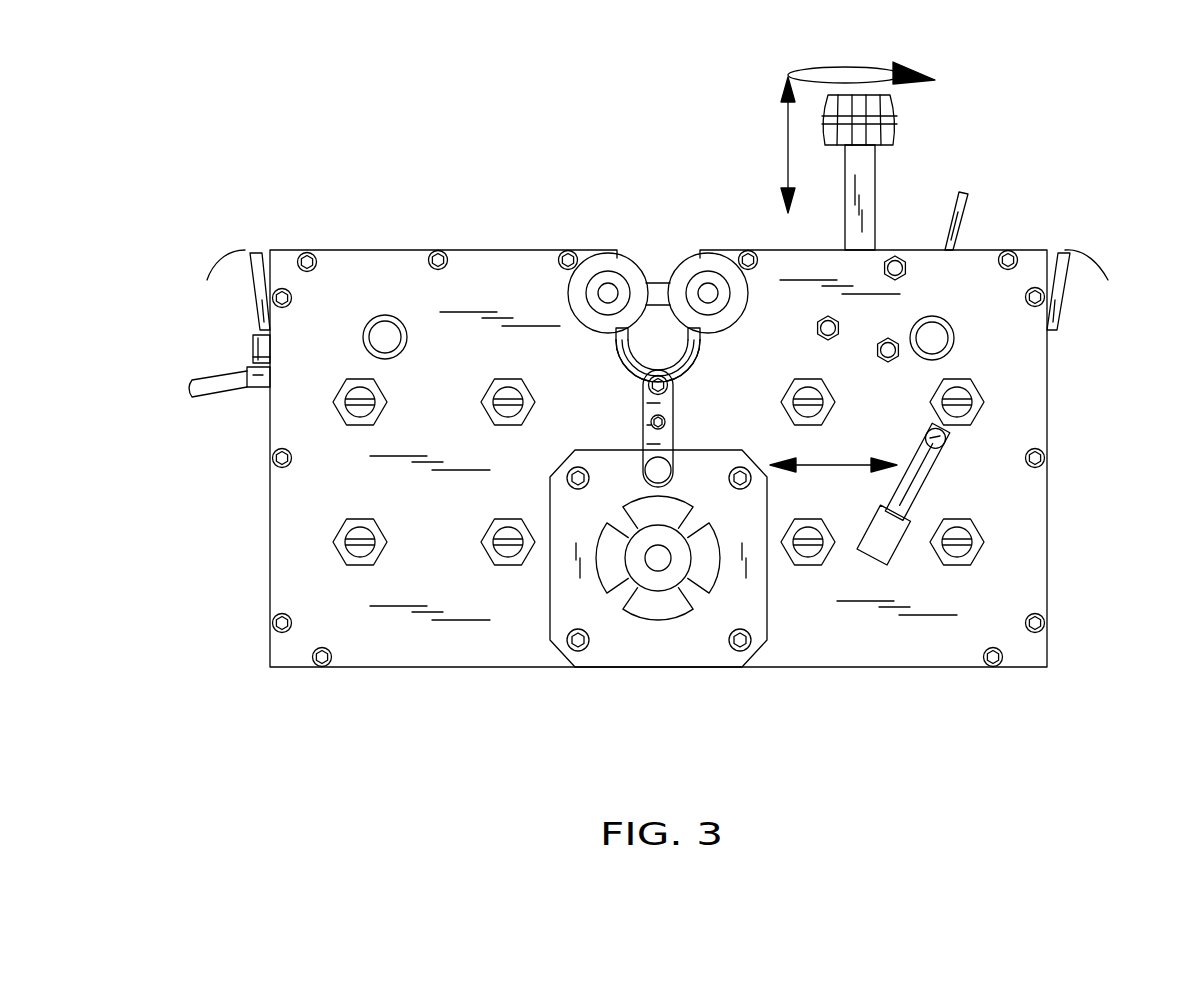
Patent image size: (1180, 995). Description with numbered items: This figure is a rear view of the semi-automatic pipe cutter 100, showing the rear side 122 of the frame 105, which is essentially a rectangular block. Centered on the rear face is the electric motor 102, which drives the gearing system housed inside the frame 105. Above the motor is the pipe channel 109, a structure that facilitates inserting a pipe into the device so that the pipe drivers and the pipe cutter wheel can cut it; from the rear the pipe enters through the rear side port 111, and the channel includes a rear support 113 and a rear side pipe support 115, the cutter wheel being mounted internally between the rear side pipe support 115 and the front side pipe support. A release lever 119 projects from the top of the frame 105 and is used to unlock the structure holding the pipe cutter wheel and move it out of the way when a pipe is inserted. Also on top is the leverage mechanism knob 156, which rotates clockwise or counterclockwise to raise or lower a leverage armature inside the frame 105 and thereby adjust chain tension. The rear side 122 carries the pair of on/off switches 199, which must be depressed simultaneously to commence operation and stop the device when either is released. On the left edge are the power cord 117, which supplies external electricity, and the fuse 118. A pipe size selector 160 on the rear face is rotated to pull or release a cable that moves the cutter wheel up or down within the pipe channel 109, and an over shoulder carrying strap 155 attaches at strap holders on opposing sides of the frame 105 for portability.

The semi-automatic pipe cutter 100 is at (200, 140).
The electric motor 102 is at (757, 603).
The frame 105 is at (1025, 650).
The pipe channel 109 is at (702, 350).
The rear side port 111 is at (668, 337).
The rear support 113 is at (672, 408).
The rear side pipe support 115 is at (620, 350).
The power cord 117 is at (222, 387).
The fuse 118 is at (253, 345).
The release lever 119 is at (968, 205).
The rear side 122 is at (1022, 520).
The over shoulder carrying strap 155 is at (252, 285).
The leverage mechanism knob 156 is at (897, 115).
The pipe size selector 160 is at (915, 478).
The pair of on/off switches 199 is at (385, 318).